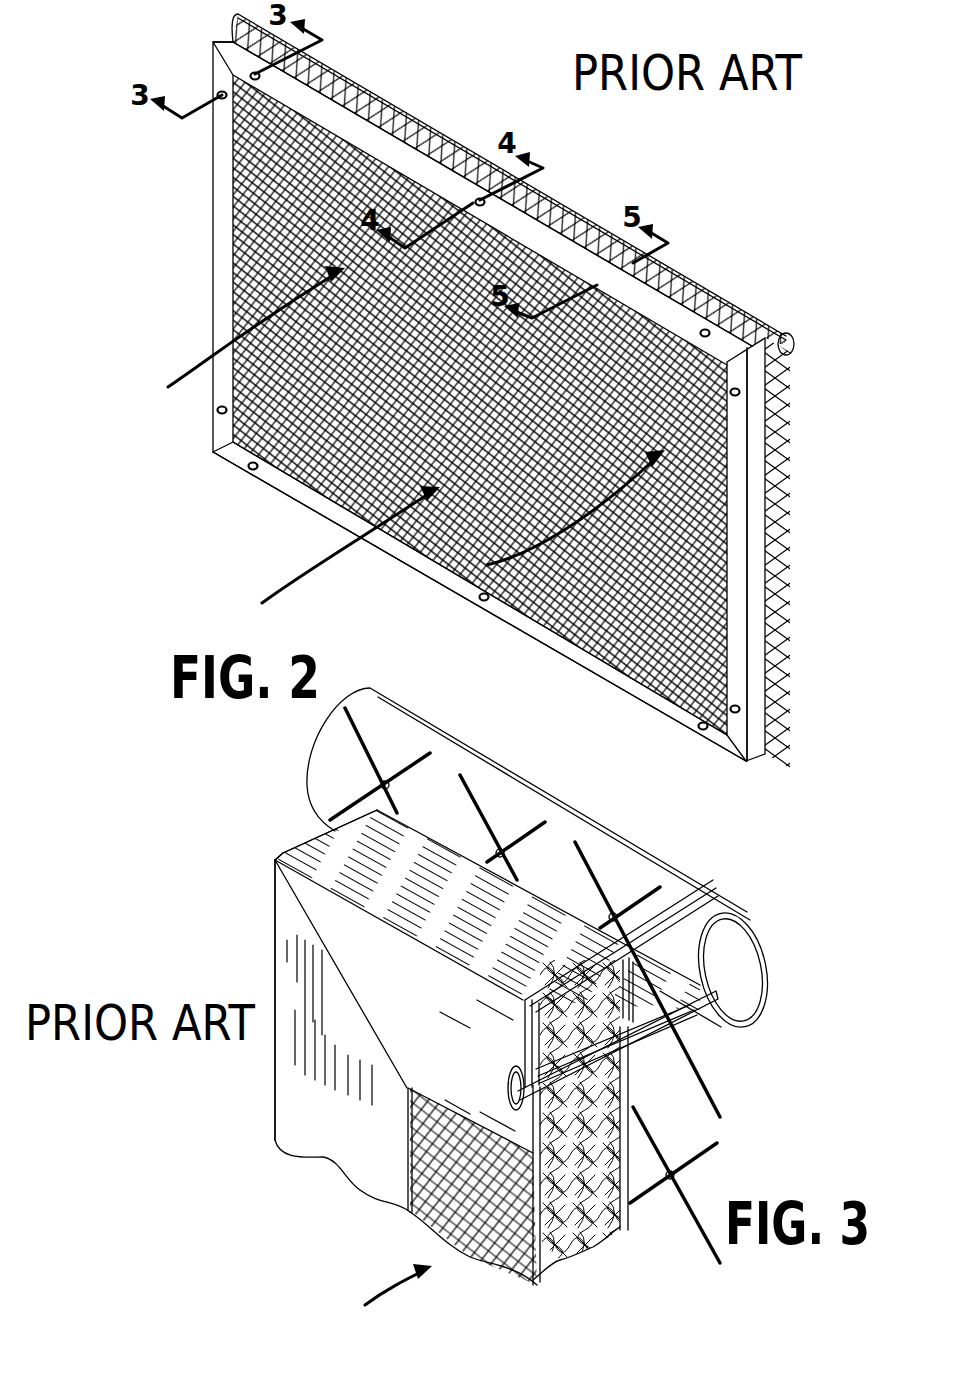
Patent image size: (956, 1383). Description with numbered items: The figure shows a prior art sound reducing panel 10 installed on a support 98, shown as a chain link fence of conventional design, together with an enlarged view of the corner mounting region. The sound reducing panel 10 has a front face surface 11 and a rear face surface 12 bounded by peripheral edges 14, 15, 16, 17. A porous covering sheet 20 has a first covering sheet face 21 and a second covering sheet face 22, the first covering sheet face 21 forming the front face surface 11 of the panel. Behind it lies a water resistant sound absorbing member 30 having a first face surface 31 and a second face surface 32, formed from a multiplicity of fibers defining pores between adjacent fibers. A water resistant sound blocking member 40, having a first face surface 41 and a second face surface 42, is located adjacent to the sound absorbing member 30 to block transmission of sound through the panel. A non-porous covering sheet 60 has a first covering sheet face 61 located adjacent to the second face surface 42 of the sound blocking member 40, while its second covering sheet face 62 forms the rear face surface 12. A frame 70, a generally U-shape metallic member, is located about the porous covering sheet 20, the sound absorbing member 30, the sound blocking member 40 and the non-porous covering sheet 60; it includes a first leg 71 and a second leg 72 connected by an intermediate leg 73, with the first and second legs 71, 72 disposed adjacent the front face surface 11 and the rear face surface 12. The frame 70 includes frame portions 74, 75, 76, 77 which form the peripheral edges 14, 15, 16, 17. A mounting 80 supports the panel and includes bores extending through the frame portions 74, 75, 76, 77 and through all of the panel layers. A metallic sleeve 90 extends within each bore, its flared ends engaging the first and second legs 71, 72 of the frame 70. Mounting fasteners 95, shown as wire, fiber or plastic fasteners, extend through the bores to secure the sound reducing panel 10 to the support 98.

In FIG. 2, the sound reducing panel 10 is at (672, 184).
In FIG. 3, the sound reducing panel 10 is at (218, 778).
In FIG. 2, the front face surface 11 is at (697, 386).
In FIG. 3, the front face surface 11 is at (422, 1213).
In FIG. 2, the rear face surface 12 is at (774, 425).
In FIG. 2, the peripheral edge 14 is at (302, 495).
In FIG. 2, the peripheral edge 15 is at (741, 463).
In FIG. 2, the peripheral edge 16 is at (418, 148).
In FIG. 3, the peripheral edge 16 is at (330, 843).
In FIG. 2, the peripheral edge 17 is at (213, 180).
In FIG. 3, the peripheral edge 17 is at (280, 963).
In FIG. 2, the porous covering sheet 20 is at (250, 230).
In FIG. 3, the porous covering sheet 20 is at (537, 1287).
In FIG. 2, the first covering sheet face 21 is at (684, 630).
In FIG. 3, the first covering sheet face 21 is at (437, 1227).
In FIG. 3, the second covering sheet face 22 is at (503, 1257).
In FIG. 2, the water resistant sound absorbing member 30 is at (252, 268).
In FIG. 3, the water resistant sound absorbing member 30 is at (575, 1270).
In FIG. 3, the first face surface 31 is at (518, 1273).
In FIG. 3, the second face surface 32 is at (597, 1247).
In FIG. 2, the water resistant sound blocking member 40 is at (255, 310).
In FIG. 3, the water resistant sound blocking member 40 is at (628, 1243).
In FIG. 3, the first face surface 41 is at (610, 1267).
In FIG. 3, the second face surface 42 is at (628, 1227).
In FIG. 2, the non-porous covering sheet 60 is at (263, 412).
In FIG. 3, the non-porous covering sheet 60 is at (627, 1207).
In FIG. 3, the first covering sheet face 61 is at (627, 1223).
In FIG. 3, the second covering sheet face 62 is at (627, 1168).
In FIG. 2, the frame 70 is at (414, 560).
In FIG. 2, the first leg 71 is at (270, 470).
In FIG. 3, the first leg 71 is at (287, 927).
In FIG. 3, the second leg 72 is at (633, 1088).
In FIG. 3, the intermediate leg 73 is at (330, 843).
In FIG. 2, the frame portion 74 is at (487, 606).
In FIG. 2, the frame portion 75 is at (754, 510).
In FIG. 2, the frame portion 76 is at (353, 110).
In FIG. 3, the frame portion 76 is at (282, 853).
In FIG. 2, the frame portion 77 is at (225, 147).
In FIG. 2, the mounting 80 is at (247, 75).
In FIG. 3, the mounting 80 is at (508, 1092).
In FIG. 2, the metallic sleeve 90 is at (263, 77).
In FIG. 3, the metallic sleeve 90 is at (518, 1103).
In FIG. 2, the mounting fastener 95 is at (253, 72).
In FIG. 3, the mounting fastener 95 is at (713, 883).
In FIG. 2, the support 98 is at (796, 341).
In FIG. 3, the support 98 is at (763, 915).